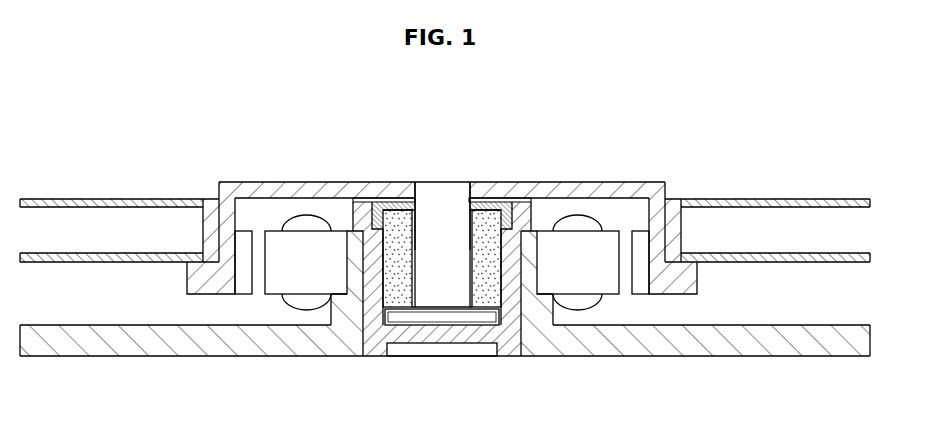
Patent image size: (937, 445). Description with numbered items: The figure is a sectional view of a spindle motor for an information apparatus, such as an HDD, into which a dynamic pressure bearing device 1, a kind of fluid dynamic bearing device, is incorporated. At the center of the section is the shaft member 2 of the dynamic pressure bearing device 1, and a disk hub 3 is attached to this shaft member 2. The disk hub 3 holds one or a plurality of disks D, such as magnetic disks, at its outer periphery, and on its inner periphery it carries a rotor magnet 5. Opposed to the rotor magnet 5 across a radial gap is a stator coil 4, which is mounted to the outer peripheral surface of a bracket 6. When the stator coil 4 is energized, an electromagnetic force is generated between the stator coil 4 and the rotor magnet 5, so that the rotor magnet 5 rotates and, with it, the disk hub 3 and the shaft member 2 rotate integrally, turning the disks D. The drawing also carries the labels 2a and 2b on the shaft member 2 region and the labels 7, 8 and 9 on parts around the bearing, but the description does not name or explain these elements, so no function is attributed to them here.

The dynamic pressure bearing device 1 is at (406, 357).
The shaft member 2 is at (442, 256).
The upper shaft portion 2a is at (435, 202).
The thrust plate 2b is at (444, 318).
The disk hub 3 is at (637, 193).
The stator coil 4 is at (613, 285).
The rotor magnet 5 is at (641, 290).
The bracket 6 is at (542, 345).
The bearing holder 7 is at (490, 345).
The cap plate 8 is at (484, 203).
The seal member 9 is at (388, 203).
The disk D is at (766, 199).